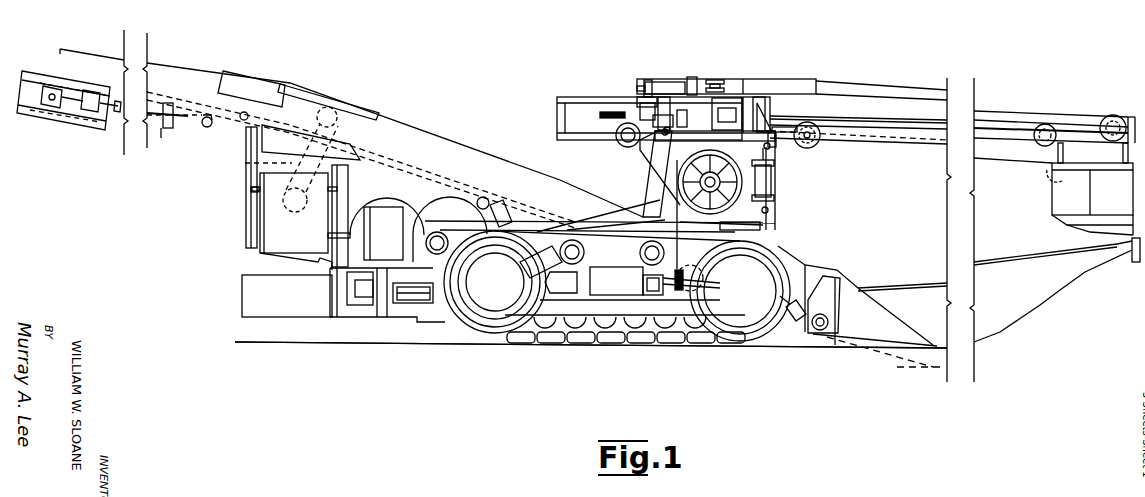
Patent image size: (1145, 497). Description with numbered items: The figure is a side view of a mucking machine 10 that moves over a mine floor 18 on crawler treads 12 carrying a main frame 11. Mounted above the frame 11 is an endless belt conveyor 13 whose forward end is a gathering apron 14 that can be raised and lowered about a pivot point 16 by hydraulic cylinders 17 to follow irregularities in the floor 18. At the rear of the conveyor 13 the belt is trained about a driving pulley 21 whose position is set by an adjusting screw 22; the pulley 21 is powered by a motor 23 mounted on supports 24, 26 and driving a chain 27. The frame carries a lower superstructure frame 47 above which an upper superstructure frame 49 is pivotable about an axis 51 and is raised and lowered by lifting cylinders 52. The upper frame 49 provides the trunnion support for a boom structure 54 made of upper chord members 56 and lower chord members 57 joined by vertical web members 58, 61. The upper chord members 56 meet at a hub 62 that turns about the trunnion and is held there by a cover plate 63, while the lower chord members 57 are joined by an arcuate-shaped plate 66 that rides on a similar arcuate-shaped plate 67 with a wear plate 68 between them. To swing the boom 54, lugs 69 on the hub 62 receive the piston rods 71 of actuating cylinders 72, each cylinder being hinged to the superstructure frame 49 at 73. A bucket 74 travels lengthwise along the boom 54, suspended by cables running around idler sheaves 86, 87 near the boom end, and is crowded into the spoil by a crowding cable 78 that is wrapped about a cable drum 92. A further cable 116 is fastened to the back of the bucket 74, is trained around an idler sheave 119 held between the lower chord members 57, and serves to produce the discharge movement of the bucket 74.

The mucking machine 10 is at (786, 46).
The main frame 11 is at (290, 317).
The crawler treads 12 is at (513, 335).
The endless belt conveyor 13 is at (397, 152).
The gathering apron 14 is at (858, 290).
The pivot point 16 is at (818, 333).
The hydraulic cylinders 17 is at (790, 322).
The mine floor 18 is at (372, 345).
The driving pulley 21 is at (65, 128).
The adjusting screw 22 is at (110, 129).
The motor 23 is at (268, 230).
The support 24 is at (252, 213).
The support 26 is at (343, 207).
The chain 27 is at (245, 170).
The lower superstructure frame 47 is at (773, 220).
The upper superstructure frame 49 is at (673, 153).
The axis 51 is at (680, 190).
The lifting cylinders 52 is at (765, 185).
The boom structure 54 is at (998, 100).
The upper chord members 56 is at (853, 90).
The lower chord members 57 is at (852, 136).
The vertical web member 58 is at (818, 107).
The vertical web member 61 is at (1127, 115).
The hub 62 is at (757, 83).
The cover plate 63 is at (708, 78).
The arcuate-shaped plate 66 is at (775, 130).
The arcuate-shaped plate 67 is at (775, 140).
The wear plate 68 is at (812, 143).
The lugs 69 is at (718, 83).
The piston rods 71 is at (692, 80).
The actuating cylinders 72 is at (663, 83).
The hinged connection 73 is at (641, 80).
The bucket 74 is at (1119, 200).
The crowding cable 78 is at (1029, 252).
The idler sheave 86 is at (1050, 122).
The idler sheave 87 is at (1113, 118).
The cable drum 92 is at (677, 172).
The cable 116 is at (997, 165).
The idler sheave 119 is at (835, 145).